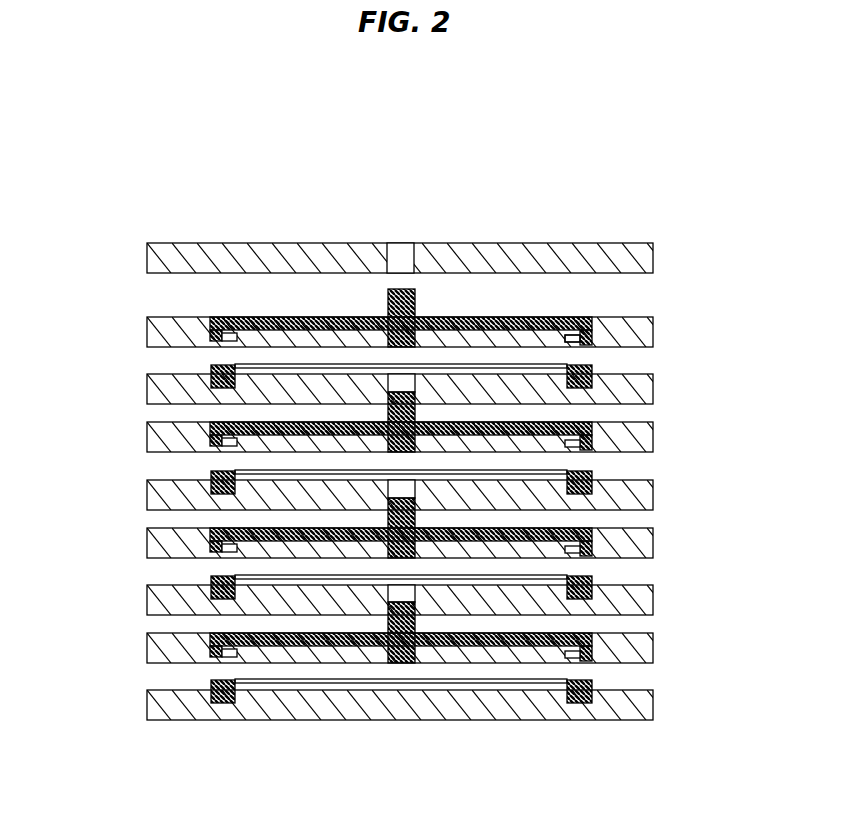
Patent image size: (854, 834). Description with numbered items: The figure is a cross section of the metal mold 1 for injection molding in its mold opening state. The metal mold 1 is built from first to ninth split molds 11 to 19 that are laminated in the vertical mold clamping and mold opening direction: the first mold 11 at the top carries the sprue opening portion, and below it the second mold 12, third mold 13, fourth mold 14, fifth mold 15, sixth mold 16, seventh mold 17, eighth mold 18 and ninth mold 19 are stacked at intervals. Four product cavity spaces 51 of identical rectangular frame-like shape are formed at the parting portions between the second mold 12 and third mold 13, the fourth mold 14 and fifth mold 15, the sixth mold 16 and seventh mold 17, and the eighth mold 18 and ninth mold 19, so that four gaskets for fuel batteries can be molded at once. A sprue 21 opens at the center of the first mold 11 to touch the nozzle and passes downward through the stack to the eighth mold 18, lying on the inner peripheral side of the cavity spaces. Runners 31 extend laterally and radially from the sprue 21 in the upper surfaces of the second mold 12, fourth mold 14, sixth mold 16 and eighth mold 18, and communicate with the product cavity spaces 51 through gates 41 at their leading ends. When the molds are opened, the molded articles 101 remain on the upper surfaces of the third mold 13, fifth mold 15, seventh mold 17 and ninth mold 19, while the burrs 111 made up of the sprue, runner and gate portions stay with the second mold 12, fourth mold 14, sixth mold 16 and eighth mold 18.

The metal mold 1 is at (234, 229).
The first mold 11 is at (154, 262).
The second mold 12 is at (154, 338).
The third mold 13 is at (154, 396).
The fourth mold 14 is at (154, 445).
The fifth mold 15 is at (154, 497).
The sixth mold 16 is at (154, 555).
The seventh mold 17 is at (154, 605).
The eighth mold 18 is at (154, 657).
The ninth mold 19 is at (154, 712).
The sprue 21 is at (400, 243).
The runner 31 is at (472, 421).
The gate 41 is at (583, 340).
The product cavity space 51 is at (588, 346).
The molded article 101 is at (595, 388).
The burr 111 is at (540, 316).